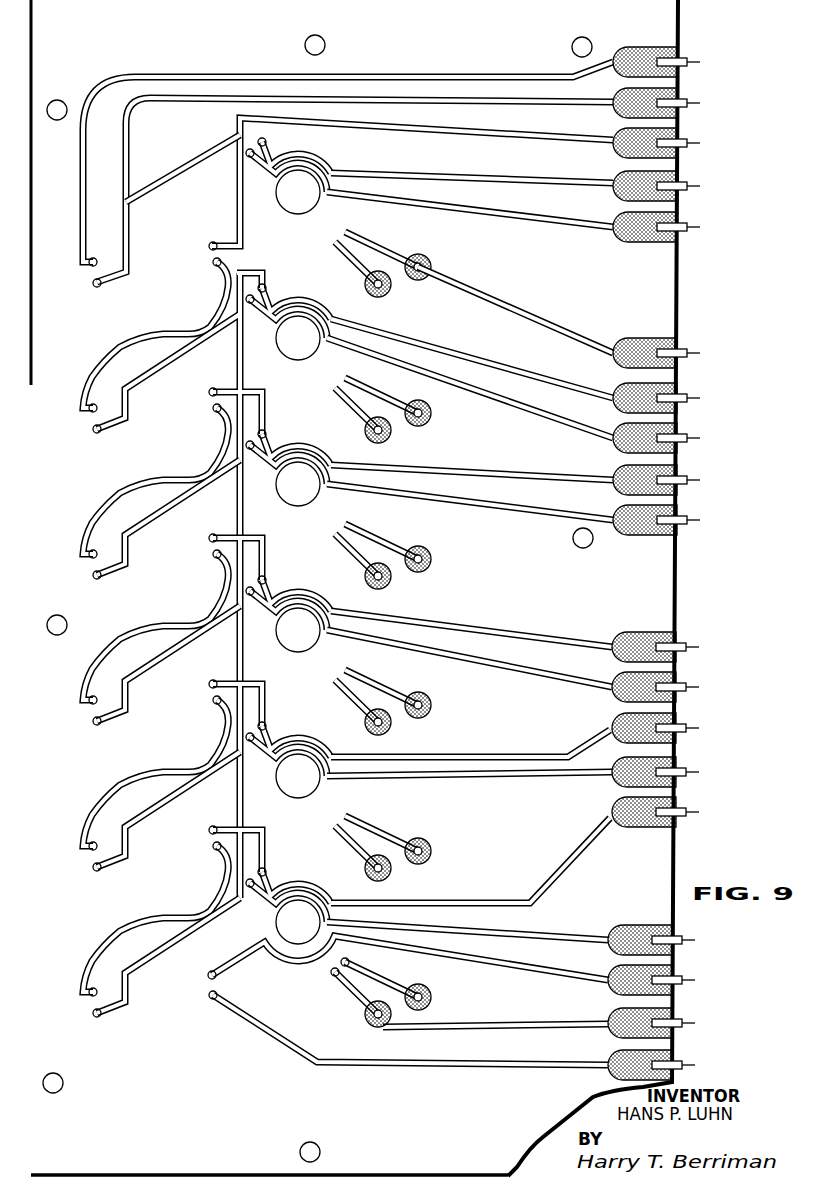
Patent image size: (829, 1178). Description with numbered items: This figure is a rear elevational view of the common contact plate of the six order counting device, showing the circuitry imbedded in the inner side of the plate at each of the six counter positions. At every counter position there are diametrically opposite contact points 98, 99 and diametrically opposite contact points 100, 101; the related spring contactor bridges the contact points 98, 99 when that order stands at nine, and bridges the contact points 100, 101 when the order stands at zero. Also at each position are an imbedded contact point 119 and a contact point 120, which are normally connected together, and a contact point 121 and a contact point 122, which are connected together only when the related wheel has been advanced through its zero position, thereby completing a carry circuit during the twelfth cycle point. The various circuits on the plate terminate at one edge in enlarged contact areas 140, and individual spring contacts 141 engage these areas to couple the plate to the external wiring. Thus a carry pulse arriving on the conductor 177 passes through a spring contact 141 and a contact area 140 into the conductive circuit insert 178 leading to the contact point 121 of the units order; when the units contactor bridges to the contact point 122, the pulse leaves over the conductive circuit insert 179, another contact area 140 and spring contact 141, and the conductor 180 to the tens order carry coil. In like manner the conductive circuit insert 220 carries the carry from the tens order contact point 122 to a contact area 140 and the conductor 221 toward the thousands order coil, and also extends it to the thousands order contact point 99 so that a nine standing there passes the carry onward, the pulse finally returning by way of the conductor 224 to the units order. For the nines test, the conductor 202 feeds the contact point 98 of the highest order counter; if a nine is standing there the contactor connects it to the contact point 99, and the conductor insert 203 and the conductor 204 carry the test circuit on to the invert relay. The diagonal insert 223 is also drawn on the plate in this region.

The contact point 98 is at (97, 287).
The contact point 99 is at (212, 243).
The contact point 100 is at (95, 258).
The contact point 101 is at (214, 266).
The contact point 119 is at (348, 962).
The contact point 120 is at (250, 158).
The contact point 121 is at (331, 974).
The contact point 122 is at (265, 142).
The contact area 140 is at (643, 47).
The spring contact 141 is at (681, 54).
The conductor 177 is at (690, 1027).
The conductive circuit insert 178 is at (500, 1026).
The conductive circuit insert 179 is at (463, 902).
The conductor 180 is at (690, 816).
The conductor 202 is at (692, 102).
The conductor insert 203 is at (463, 134).
The conductor 204 is at (692, 142).
The conductive circuit insert 220 is at (465, 755).
The conductor 221 is at (690, 733).
The printed conductor 223 is at (182, 170).
The conductor 224 is at (692, 186).